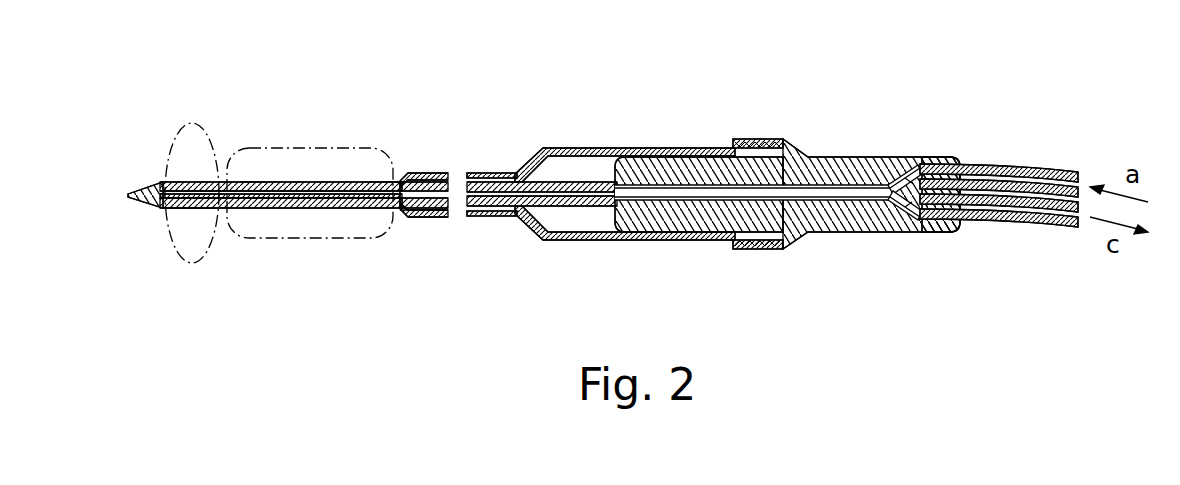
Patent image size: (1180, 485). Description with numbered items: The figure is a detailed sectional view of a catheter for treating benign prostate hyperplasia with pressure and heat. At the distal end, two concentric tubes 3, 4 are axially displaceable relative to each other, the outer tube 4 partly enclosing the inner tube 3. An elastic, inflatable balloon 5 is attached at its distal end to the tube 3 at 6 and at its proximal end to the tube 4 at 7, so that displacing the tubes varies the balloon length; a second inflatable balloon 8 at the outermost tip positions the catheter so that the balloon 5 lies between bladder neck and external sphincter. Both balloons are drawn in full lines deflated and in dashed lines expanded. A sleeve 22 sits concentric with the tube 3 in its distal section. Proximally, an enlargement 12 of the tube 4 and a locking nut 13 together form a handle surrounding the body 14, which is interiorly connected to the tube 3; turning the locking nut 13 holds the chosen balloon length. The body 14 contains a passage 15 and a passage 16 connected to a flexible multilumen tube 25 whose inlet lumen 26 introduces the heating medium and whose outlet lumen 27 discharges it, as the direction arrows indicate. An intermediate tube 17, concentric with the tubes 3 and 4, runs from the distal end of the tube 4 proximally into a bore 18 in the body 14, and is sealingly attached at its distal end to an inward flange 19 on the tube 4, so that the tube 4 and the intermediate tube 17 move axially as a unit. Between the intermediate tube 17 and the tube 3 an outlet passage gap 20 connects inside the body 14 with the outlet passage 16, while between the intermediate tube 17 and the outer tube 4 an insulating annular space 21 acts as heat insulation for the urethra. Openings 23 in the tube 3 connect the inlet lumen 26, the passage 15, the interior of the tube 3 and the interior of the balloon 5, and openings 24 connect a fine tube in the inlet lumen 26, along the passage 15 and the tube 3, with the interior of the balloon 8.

The tube 3 is at (303, 180).
The tube 4 is at (430, 178).
The elastic inflatable balloon 5 is at (310, 238).
The distal attachment point of balloon 6 is at (228, 210).
The proximal attachment point of balloon 7 is at (398, 210).
The second inflatable balloon 8 is at (195, 210).
The enlargement 12 is at (603, 148).
The locking nut 13 is at (750, 250).
The body 14 is at (868, 233).
The passage 15 is at (908, 157).
The passage 16 is at (912, 206).
The intermediate tube 17 is at (428, 216).
The bore 18 is at (830, 202).
The inward flange 19 is at (405, 178).
The outlet passage gap 20 is at (390, 180).
The insulating annular space 21 is at (498, 216).
The sleeve 22 is at (150, 209).
The openings 23 is at (253, 180).
The openings 24 is at (195, 180).
The flexible multilumen tube 25 is at (985, 168).
The inlet lumen 26 is at (1043, 177).
The outlet lumen 27 is at (1012, 210).